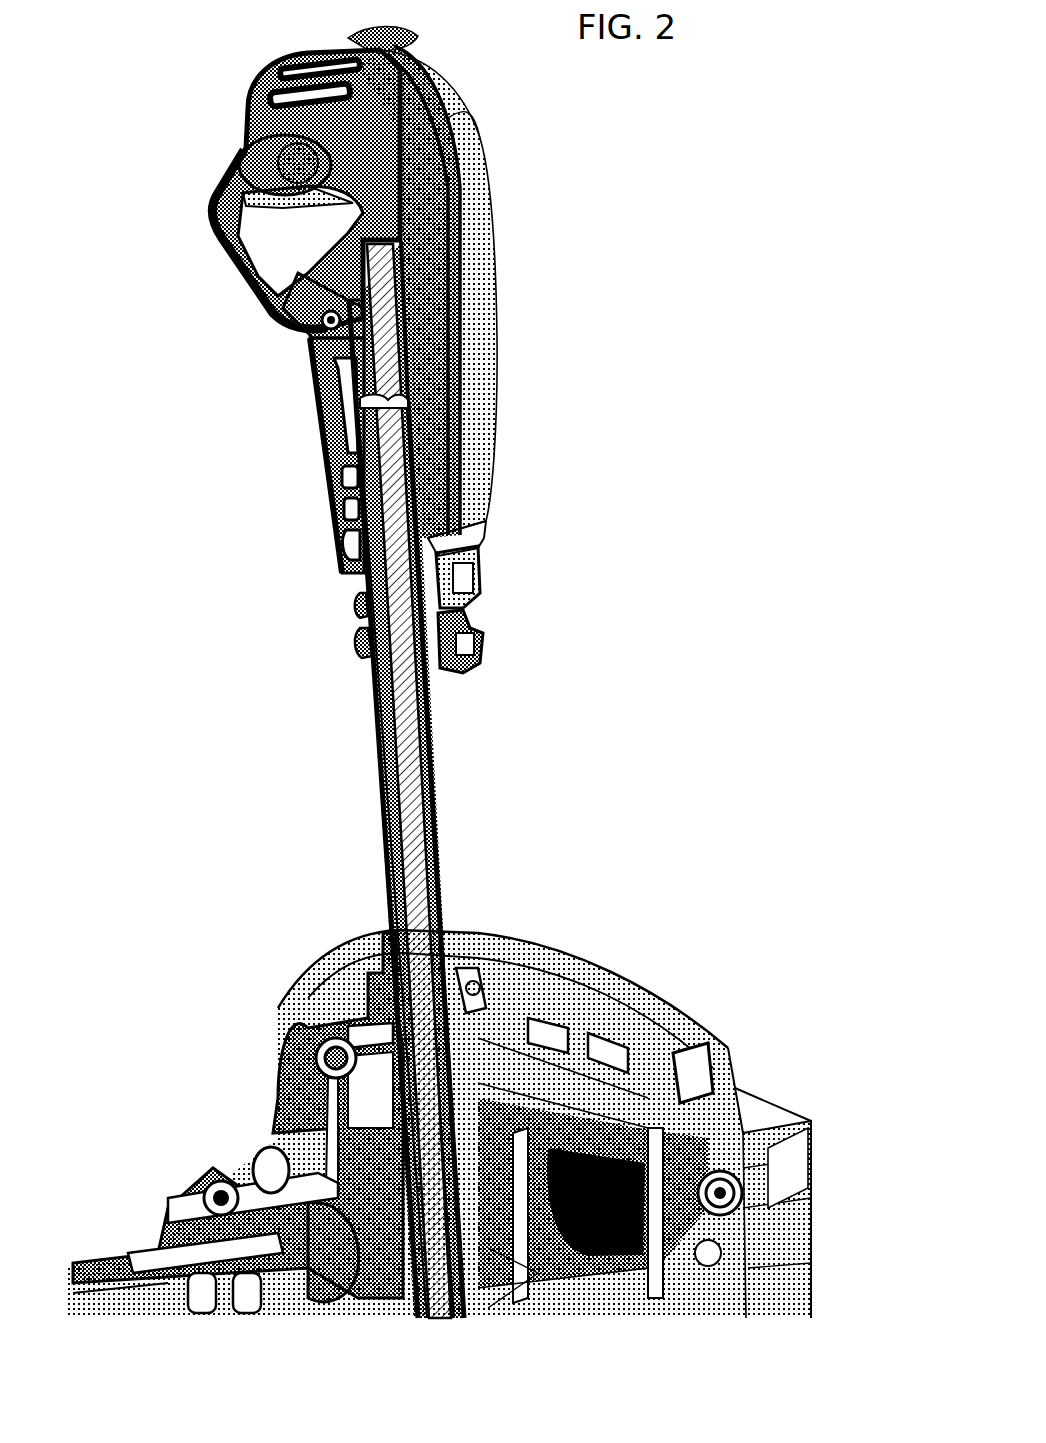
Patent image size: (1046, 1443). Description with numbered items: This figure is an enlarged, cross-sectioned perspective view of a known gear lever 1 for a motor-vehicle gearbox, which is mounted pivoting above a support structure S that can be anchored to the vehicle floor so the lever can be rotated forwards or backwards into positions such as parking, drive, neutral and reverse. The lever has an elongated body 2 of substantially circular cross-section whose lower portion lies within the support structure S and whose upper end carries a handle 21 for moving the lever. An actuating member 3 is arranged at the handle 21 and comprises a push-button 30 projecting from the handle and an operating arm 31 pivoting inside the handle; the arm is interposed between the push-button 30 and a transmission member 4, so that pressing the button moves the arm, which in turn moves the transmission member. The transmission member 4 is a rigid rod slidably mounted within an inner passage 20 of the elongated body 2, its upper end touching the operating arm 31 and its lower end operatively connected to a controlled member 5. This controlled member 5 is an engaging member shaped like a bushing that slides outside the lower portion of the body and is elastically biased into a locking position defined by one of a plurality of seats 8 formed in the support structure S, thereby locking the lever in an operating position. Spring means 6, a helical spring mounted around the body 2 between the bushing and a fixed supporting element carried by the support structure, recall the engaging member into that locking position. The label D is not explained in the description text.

The gear lever 1 is at (472, 636).
The elongated body 2 is at (438, 782).
The actuating member 3 is at (222, 222).
The transmission member 4 is at (402, 772).
The controlled member 5 is at (460, 985).
The spring means 6 is at (395, 1105).
The seats 8 is at (545, 1045).
The inner passage 20 is at (335, 1045).
The handle 21 is at (480, 176).
The push-button 30 is at (252, 278).
The operating arm 31 is at (295, 212).
The shift device D is at (195, 838).
The support structure S is at (792, 1085).